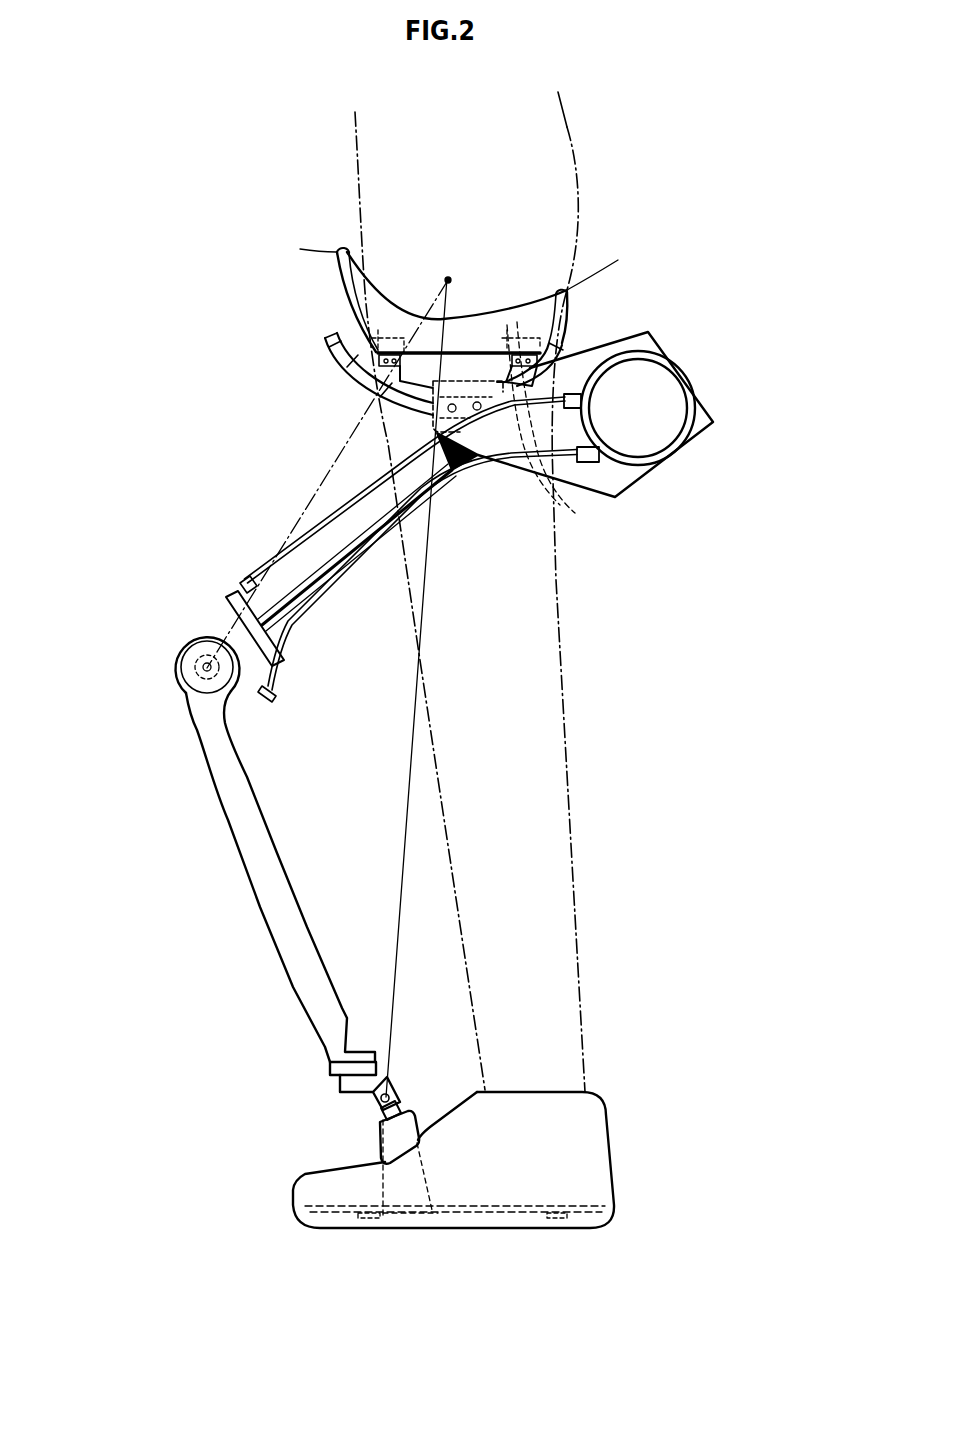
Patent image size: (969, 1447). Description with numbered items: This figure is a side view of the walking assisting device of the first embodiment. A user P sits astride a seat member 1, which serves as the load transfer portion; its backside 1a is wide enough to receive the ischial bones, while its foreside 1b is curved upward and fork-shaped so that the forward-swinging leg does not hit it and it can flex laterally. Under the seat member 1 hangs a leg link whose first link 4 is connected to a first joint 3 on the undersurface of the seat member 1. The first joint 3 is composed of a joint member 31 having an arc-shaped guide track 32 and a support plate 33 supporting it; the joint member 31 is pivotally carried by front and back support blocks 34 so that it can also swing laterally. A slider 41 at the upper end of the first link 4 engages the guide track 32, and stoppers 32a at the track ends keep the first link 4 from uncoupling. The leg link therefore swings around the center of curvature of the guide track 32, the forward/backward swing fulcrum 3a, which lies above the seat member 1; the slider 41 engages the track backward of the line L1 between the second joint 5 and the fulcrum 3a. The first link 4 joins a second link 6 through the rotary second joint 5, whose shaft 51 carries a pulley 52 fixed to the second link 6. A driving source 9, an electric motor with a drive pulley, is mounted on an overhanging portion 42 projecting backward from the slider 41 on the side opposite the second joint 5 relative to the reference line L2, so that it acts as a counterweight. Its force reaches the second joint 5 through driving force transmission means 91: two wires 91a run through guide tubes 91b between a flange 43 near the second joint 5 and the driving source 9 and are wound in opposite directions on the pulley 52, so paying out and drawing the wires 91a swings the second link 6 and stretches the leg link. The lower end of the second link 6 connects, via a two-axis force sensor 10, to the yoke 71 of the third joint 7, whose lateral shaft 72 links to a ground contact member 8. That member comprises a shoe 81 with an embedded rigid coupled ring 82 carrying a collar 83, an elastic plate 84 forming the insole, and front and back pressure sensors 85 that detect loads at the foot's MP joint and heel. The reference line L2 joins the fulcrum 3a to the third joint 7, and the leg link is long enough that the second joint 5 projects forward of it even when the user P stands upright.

The user P is at (583, 130).
The line between second joint and swing fulcrum L1 is at (305, 496).
The reference line L2 is at (402, 785).
The seat member 1 is at (487, 298).
The backside 1a is at (571, 294).
The foreside 1b is at (338, 250).
The first joint 3 is at (427, 340).
The forward/backward swing fulcrum 3a is at (448, 280).
The joint member 31 is at (310, 462).
The guide track 32 is at (372, 385).
The stopper 32a is at (333, 345).
The support plate 33 is at (432, 404).
The support block 34 is at (382, 322).
The first link 4 is at (343, 552).
The slider 41 is at (563, 508).
The overhanging portion 42 is at (623, 478).
The flange 43 is at (292, 636).
The second joint 5 is at (162, 680).
The shaft 51 is at (195, 700).
The pulley 52 is at (173, 663).
The second link 6 is at (245, 832).
The 2-axis force sensor 10 is at (330, 1068).
The third joint 7 is at (378, 1059).
The yoke 71 is at (400, 1085).
The shaft 72 is at (392, 1094).
The ground contact member 8 is at (483, 1189).
The shoe 81 is at (610, 1190).
The coupled ring 82 is at (388, 1140).
The collar 83 is at (403, 1113).
The elastic plate 84 is at (482, 1216).
The pressure sensor 85 is at (369, 1218).
The driving source 9 is at (673, 390).
The driving force transmission means 91 is at (472, 457).
The wire 91a is at (232, 602).
The guide tube 91b is at (508, 460).